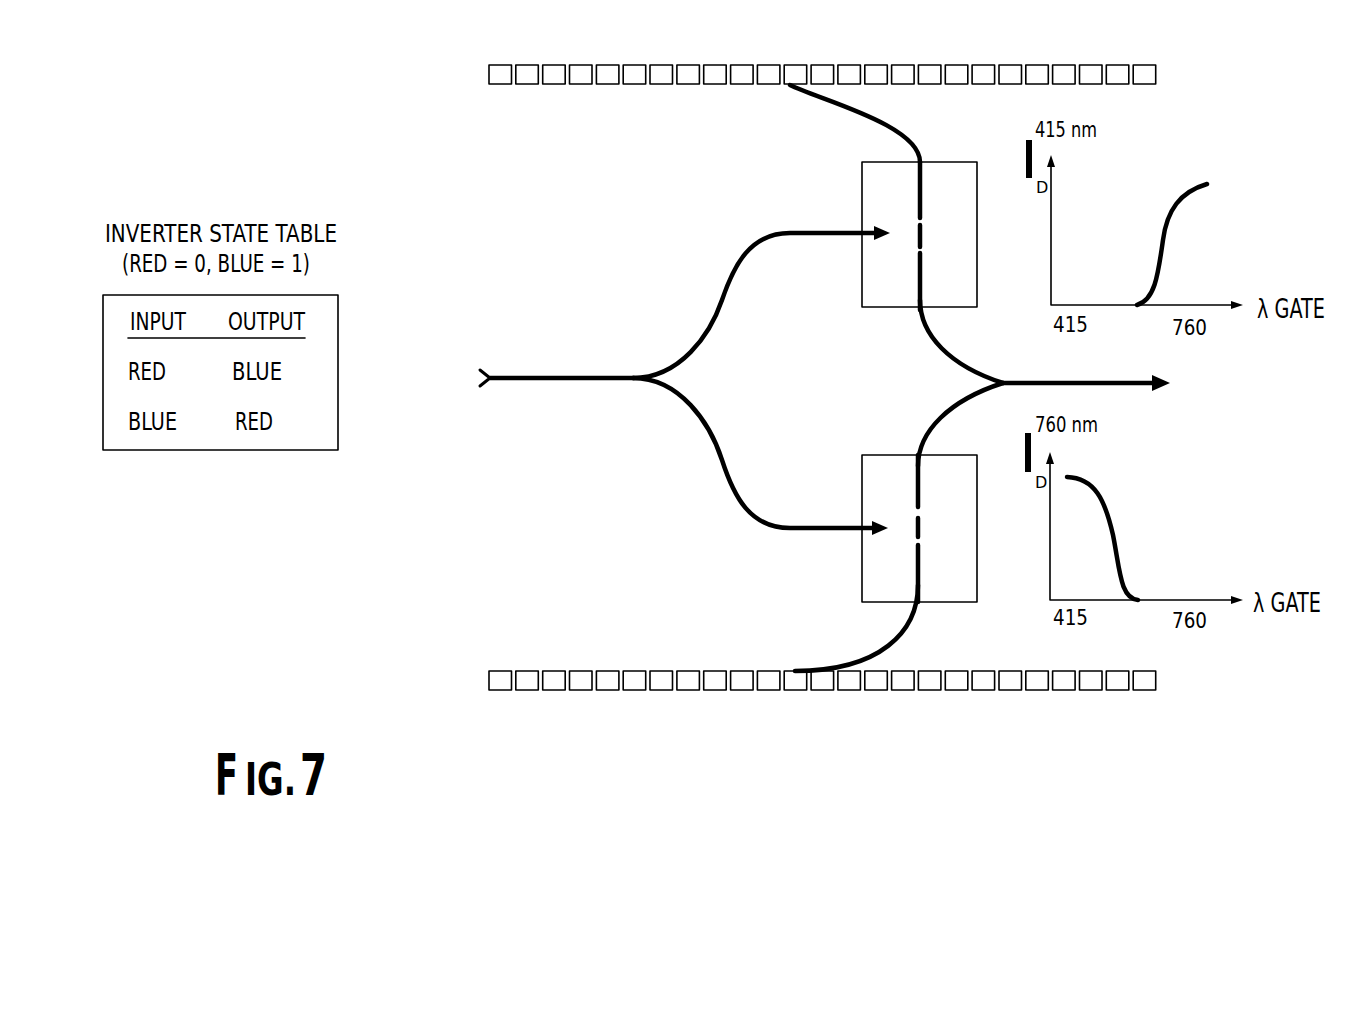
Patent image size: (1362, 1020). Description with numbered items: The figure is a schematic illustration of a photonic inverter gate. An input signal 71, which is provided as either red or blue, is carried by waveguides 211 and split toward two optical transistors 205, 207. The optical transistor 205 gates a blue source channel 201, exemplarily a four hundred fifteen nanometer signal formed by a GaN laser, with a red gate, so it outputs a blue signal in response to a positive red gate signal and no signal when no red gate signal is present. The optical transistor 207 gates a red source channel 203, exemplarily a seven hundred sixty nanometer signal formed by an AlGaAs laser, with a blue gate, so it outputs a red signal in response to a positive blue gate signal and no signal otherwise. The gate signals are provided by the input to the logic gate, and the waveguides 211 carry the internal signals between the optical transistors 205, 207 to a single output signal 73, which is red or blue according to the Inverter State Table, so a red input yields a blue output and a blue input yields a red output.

The input signal 71 is at (447, 357).
The output signal 73 is at (1170, 395).
The blue source channel 201 is at (552, 85).
The red source channel 203 is at (557, 670).
The optical transistor 205 is at (862, 196).
The optical transistor 207 is at (862, 545).
The waveguides 211 is at (714, 310).